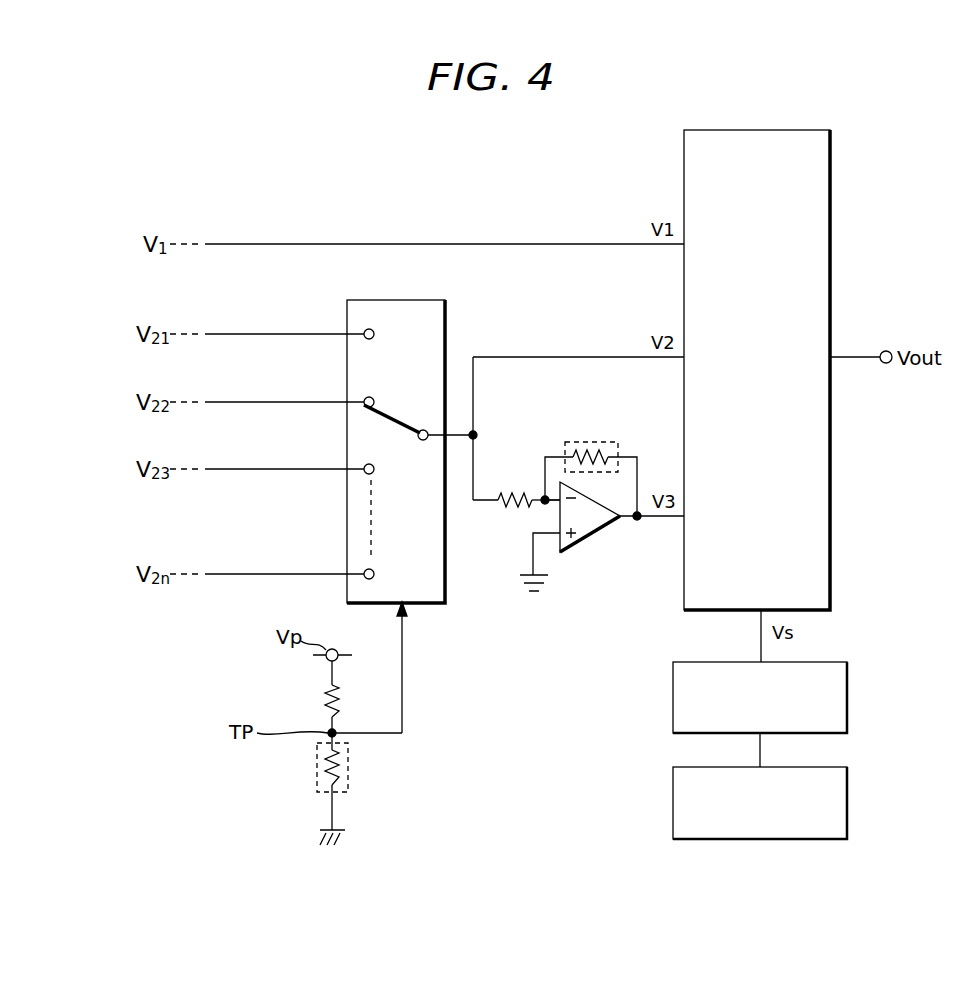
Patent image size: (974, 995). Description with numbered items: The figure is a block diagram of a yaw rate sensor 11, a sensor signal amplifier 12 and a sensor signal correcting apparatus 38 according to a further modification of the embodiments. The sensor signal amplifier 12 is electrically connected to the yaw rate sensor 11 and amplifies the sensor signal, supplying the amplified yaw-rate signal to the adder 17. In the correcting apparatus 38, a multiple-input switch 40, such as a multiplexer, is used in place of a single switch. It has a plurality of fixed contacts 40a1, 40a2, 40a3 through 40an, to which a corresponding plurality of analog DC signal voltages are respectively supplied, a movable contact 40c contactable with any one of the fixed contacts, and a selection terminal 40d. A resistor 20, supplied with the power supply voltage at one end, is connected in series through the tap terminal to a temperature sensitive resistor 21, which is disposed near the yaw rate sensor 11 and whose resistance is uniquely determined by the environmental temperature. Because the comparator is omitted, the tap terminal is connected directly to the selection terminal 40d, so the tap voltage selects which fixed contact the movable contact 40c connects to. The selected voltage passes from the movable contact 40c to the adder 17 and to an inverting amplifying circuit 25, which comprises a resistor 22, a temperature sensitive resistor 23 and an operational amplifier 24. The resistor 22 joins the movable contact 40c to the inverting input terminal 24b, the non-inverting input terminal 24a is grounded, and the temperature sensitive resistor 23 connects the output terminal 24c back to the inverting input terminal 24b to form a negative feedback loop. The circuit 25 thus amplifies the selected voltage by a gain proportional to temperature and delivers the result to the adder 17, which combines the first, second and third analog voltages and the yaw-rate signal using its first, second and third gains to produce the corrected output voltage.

The sensor signal correcting apparatus 38 is at (608, 161).
The adder 17 is at (805, 126).
The multiple-input switch 40 is at (440, 300).
The fixed contact 40a1 is at (365, 331).
The fixed contact 40a2 is at (365, 399).
The fixed contact 40a3 is at (365, 466).
The fixed contact 40an is at (365, 571).
The movable contact 40c is at (422, 430).
The selection terminal 40d is at (405, 610).
The resistor 22 is at (516, 490).
The temperature sensitive resistor 23 is at (595, 441).
The operational amplifier 24 is at (596, 536).
The non-inverting input terminal 24a is at (548, 538).
The inverting input terminal 24b is at (553, 504).
The output terminal 24c is at (631, 522).
The inverting amplifying circuit 25 is at (583, 577).
The resistor 20 is at (320, 699).
The temperature sensitive resistor 21 is at (316, 770).
The sensor signal amplifier 12 is at (848, 676).
The yaw rate sensor 11 is at (848, 781).